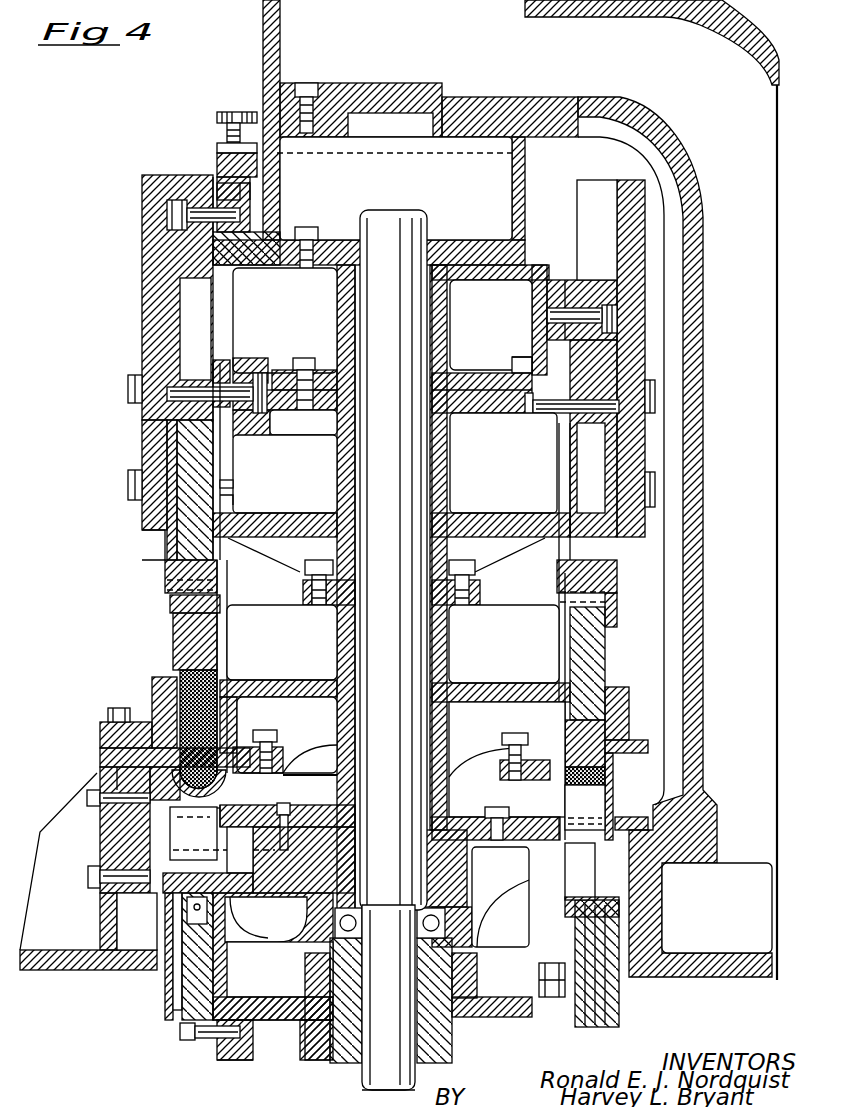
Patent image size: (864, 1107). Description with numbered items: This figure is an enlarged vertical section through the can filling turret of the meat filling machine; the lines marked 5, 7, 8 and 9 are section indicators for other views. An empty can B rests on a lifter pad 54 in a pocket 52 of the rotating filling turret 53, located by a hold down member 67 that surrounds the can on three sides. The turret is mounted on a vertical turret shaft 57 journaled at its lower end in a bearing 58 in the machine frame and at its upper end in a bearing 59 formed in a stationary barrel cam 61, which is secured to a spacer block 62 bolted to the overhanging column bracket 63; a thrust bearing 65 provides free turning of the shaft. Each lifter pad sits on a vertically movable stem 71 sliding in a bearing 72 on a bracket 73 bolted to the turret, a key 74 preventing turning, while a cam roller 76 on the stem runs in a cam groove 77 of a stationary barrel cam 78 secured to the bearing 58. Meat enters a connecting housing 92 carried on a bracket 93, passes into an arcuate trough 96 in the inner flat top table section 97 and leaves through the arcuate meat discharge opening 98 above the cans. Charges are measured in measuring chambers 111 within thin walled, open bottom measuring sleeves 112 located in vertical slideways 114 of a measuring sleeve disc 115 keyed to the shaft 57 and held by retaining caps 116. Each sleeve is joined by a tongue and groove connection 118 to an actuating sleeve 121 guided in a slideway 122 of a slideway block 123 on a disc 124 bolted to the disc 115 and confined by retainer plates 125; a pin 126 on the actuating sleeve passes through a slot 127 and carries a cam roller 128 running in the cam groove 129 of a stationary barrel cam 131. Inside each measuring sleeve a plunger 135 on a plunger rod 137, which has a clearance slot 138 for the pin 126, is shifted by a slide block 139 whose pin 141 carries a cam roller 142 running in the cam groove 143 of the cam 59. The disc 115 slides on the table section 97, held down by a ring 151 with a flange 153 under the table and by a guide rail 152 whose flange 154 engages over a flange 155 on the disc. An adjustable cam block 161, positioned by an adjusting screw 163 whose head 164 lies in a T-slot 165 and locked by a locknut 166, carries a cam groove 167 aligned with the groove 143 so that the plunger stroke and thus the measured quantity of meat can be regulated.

The section line 5- 5 is at (160, 678).
The section line 7- 7 is at (215, 63).
The section line 8- 8 is at (180, 165).
The section line 9- 9 is at (187, 556).
The pocket 52 is at (247, 815).
The can filling turret 53 is at (270, 813).
The lifter pad 54 is at (167, 888).
The turret shaft 57 is at (393, 650).
The bearing 58 is at (343, 1050).
The bearing 59 is at (448, 300).
The stationary barrel cam 61 is at (272, 283).
The spacer block 62 is at (512, 177).
The column bracket 63 is at (620, 120).
The thrust bearing 65 is at (441, 930).
The can locating and hold down member 67 is at (219, 873).
The stem 71 is at (207, 962).
The bearing 72 is at (167, 983).
The bracket 73 is at (371, 923).
The key 74 is at (177, 993).
The cam roller 76 is at (227, 1063).
The cam groove 77 is at (227, 1007).
The stationary barrel cam 78 is at (315, 963).
The connecting housing 92 is at (147, 856).
The bracket 93 is at (127, 845).
The arcuate trough 96 is at (177, 780).
The inner flat top table section 97 is at (143, 767).
The meat discharge opening 98 is at (197, 753).
The measuring chamber 111 is at (229, 703).
The measuring sleeve 112 is at (173, 670).
The slideway 114 is at (239, 720).
The measuring sleeve disc 115 is at (293, 687).
The retaining cap 116 is at (163, 680).
The tongue and groove connection 118 is at (162, 607).
The actuating sleeve 121 is at (167, 543).
The slideway 122 is at (227, 500).
The slideway block 123 is at (227, 488).
The disc 124 is at (302, 520).
The retainer plate 125 is at (152, 422).
The pin 126 is at (197, 388).
The slot 127 is at (222, 463).
The cam roller 128 is at (243, 367).
The cam groove 129 is at (272, 358).
The stationary barrel cam 131 is at (283, 408).
The plunger 135 is at (207, 638).
The plunger rod 137 is at (190, 507).
The slot 138 is at (190, 322).
The slide block 139 is at (173, 255).
The pin 141 is at (167, 210).
The cam roller 142 is at (213, 200).
The cam groove 143 is at (542, 352).
The ring 151 is at (278, 760).
The guide rail 152 is at (110, 743).
The flange 153 is at (224, 810).
The flange 154 is at (143, 733).
The flange 155 is at (100, 752).
The adjustable cam block 161 is at (217, 245).
The adjusting screw 163 is at (236, 106).
The head 164 is at (247, 197).
The T-slot 165 is at (252, 183).
The locknut 166 is at (217, 146).
The cam groove 167 is at (217, 170).
The can B is at (598, 800).